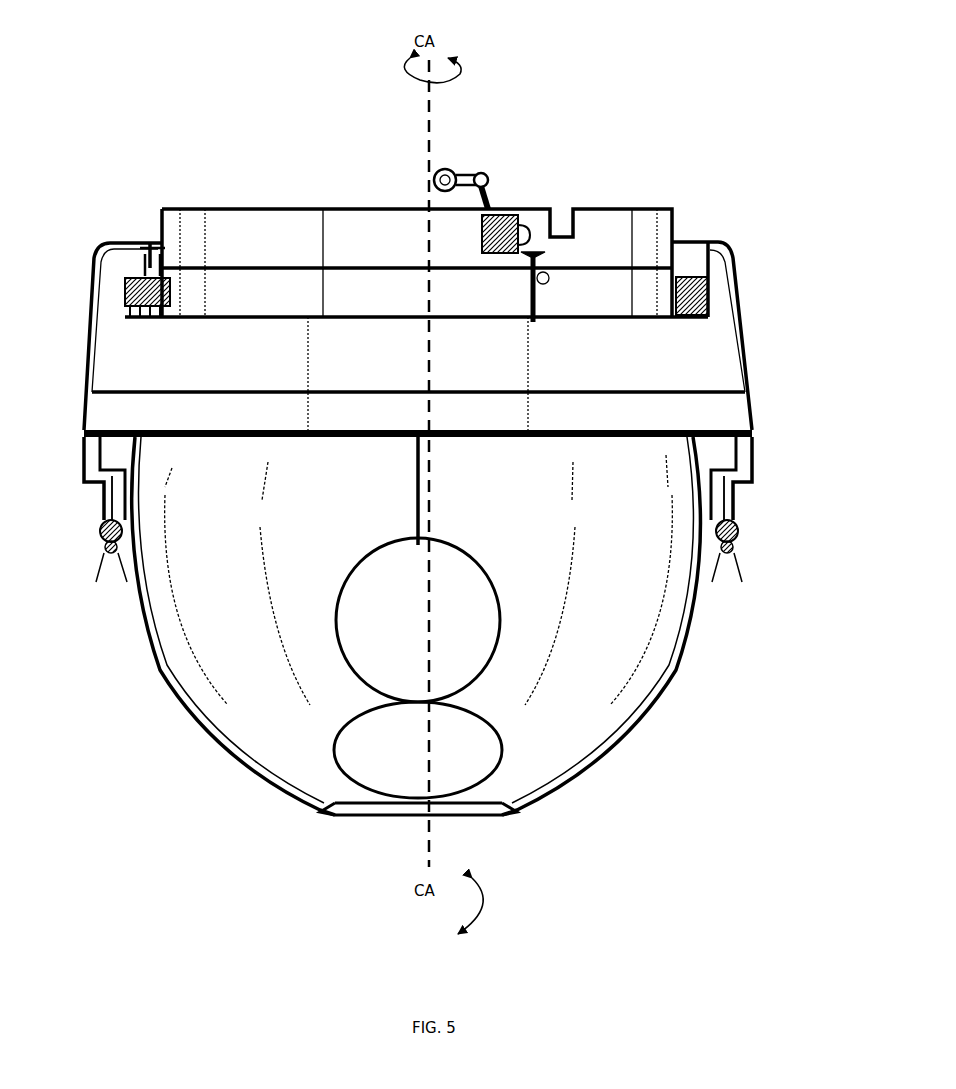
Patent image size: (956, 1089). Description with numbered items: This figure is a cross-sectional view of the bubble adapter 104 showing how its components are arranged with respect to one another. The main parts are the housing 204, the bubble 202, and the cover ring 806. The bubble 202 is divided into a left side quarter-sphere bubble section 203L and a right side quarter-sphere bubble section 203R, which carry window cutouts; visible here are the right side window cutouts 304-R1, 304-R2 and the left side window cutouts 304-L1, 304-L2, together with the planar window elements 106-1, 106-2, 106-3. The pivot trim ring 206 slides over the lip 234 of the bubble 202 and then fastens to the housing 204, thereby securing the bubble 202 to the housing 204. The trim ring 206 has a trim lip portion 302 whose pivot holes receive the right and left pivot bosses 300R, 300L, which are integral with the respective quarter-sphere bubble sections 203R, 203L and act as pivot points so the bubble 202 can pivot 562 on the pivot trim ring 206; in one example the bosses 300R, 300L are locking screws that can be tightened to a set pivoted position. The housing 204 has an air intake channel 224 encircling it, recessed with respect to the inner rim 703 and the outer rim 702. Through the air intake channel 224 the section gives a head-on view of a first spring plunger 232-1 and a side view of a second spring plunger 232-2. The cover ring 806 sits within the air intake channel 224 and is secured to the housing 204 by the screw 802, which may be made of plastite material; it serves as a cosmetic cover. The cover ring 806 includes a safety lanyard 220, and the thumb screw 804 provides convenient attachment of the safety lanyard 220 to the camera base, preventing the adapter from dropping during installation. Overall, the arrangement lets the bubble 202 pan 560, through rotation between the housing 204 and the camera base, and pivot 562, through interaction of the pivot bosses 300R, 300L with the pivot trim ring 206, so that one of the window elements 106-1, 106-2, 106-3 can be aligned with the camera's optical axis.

The bubble adapter 104 is at (156, 44).
The pan 560 is at (450, 82).
The pivot 562 is at (492, 903).
The cover ring 806 is at (622, 220).
The outer rim 702 is at (108, 240).
The inner rim 703 is at (722, 240).
The air intake channel 224 is at (172, 320).
The first spring plunger 232-1 is at (150, 250).
The second spring plunger 232-2 is at (545, 320).
The safety lanyard 220 is at (500, 215).
The thumb screw 804 is at (447, 168).
The screw 802 is at (528, 268).
The housing 204 is at (712, 372).
The pivot trim ring 206 is at (720, 440).
The right pivot boss 300R is at (100, 565).
The left pivot boss 300L is at (740, 570).
The trim lip portion 302 is at (103, 498).
The bubble 202 is at (221, 795).
The right side quarter-sphere bubble section 203R is at (210, 630).
The left side quarter-sphere bubble section 203L is at (615, 660).
The planar window element 106-1 is at (455, 578).
The planar window element 106-2 is at (460, 740).
The planar window element 106-3 is at (457, 808).
The lip 234 is at (188, 440).
The right side window cutout 304-R1 is at (345, 583).
The right side window cutout 304-R2 is at (338, 757).
The left side window cutout 304-L1 is at (500, 607).
The left side window cutout 304-L2 is at (503, 750).